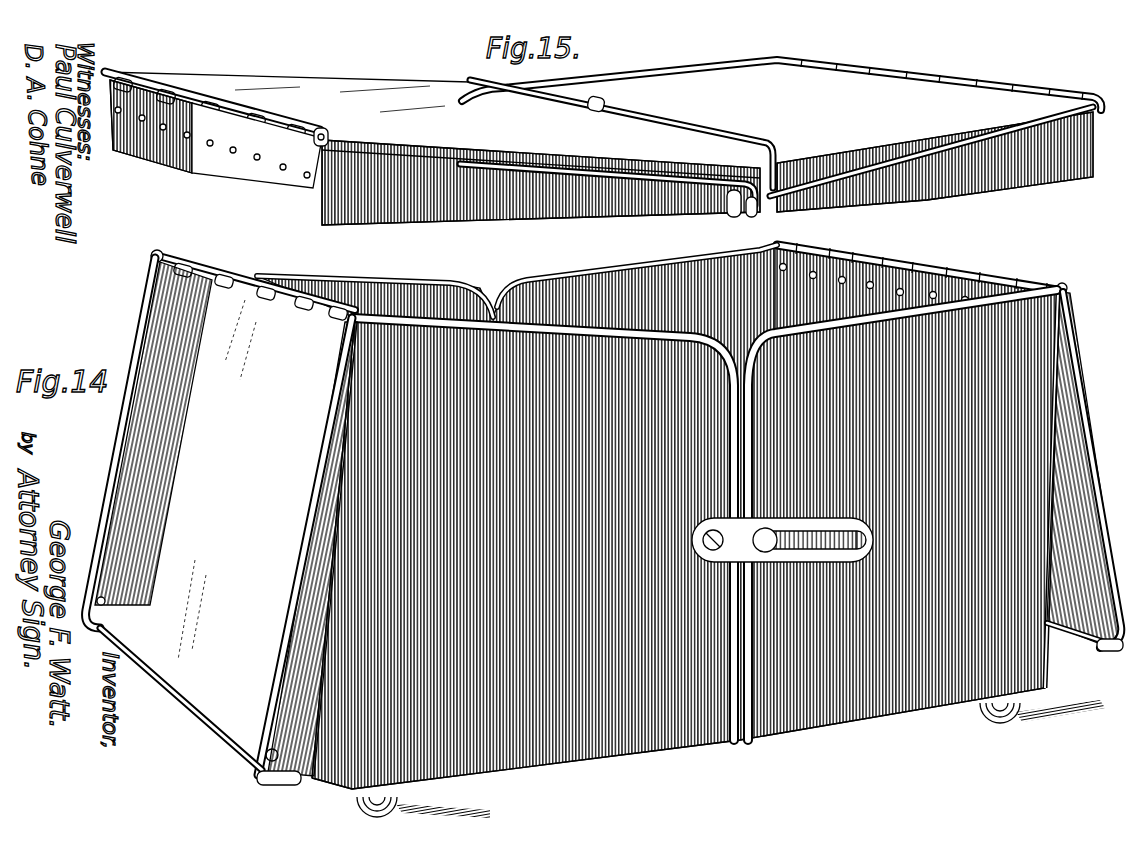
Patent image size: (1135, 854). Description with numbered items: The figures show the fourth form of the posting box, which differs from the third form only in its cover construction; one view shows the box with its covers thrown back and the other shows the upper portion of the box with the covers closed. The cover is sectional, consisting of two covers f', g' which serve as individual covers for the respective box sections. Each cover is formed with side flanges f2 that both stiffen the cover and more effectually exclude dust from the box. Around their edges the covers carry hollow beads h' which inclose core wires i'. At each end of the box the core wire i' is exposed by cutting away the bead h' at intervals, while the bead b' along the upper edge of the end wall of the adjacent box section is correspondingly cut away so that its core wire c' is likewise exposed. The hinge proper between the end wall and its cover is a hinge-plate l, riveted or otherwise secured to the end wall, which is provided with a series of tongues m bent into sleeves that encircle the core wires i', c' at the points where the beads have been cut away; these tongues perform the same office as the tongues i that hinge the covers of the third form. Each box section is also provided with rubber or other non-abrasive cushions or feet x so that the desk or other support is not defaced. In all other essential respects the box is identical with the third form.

In FIG. 15, the cover f' is at (287, 90).
In FIG. 14, the cover f' is at (226, 519).
In FIG. 15, the cover g' is at (781, 71).
In FIG. 15, the hollow bead h' is at (776, 142).
In FIG. 14, the hollow bead h' is at (592, 453).
In FIG. 15, the core wire i' is at (554, 167).
In FIG. 14, the core wire i' is at (672, 717).
In FIG. 15, the hinge-plate l is at (222, 148).
In FIG. 15, the tongues m is at (303, 140).
In FIG. 15, the side flanges f2 is at (718, 170).
In FIG. 14, the side flanges f2 is at (122, 575).
In FIG. 14, the bead b' is at (634, 275).
In FIG. 14, the core wire c' is at (305, 546).
In FIG. 14, the tongues i is at (248, 270).
In FIG. 14, the cushions or feet x is at (356, 803).